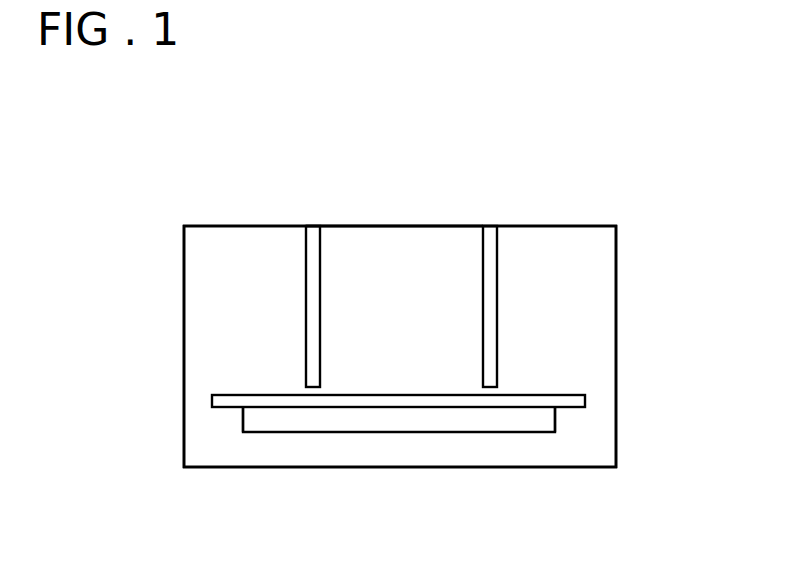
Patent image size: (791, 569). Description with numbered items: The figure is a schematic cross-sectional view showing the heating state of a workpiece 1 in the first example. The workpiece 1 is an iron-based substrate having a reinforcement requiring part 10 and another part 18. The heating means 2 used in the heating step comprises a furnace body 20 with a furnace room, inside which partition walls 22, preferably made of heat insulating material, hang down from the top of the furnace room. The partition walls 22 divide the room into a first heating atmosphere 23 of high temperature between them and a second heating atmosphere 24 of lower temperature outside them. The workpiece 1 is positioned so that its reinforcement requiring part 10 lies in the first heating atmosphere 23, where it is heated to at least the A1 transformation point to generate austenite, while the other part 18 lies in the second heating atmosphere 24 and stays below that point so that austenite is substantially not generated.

The workpiece 1 is at (557, 393).
The heating means 2 is at (623, 307).
The reinforcement requiring part 10 is at (402, 402).
The other part 18 is at (233, 400).
The furnace body 20 is at (616, 262).
The partition walls 22 is at (320, 308).
The first heating atmosphere 23 is at (427, 262).
The second heating atmosphere 24 is at (245, 253).